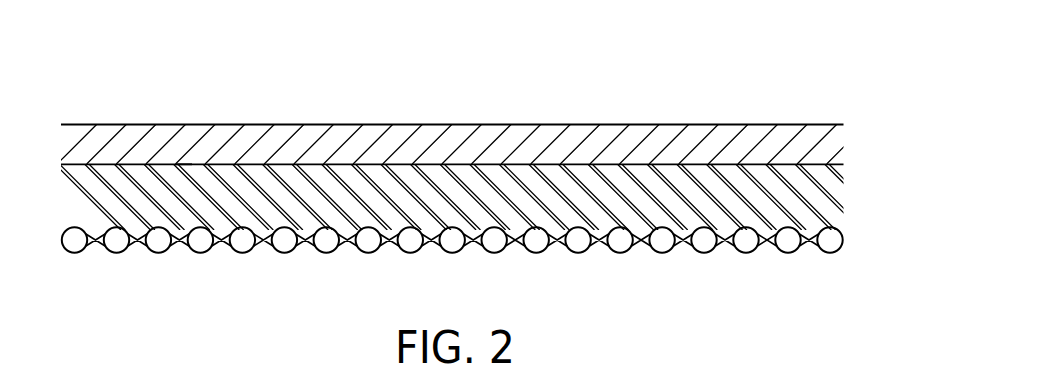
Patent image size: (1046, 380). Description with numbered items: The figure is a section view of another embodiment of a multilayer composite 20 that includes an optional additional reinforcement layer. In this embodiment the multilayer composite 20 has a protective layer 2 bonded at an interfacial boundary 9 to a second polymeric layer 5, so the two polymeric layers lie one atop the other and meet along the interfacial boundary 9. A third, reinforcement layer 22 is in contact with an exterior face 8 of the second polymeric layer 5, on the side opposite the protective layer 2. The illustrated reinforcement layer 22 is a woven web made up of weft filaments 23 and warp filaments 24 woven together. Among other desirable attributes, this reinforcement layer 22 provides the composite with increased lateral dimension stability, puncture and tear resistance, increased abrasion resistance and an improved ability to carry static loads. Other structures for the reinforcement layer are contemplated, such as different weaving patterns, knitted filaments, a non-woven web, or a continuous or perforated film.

The multilayer composite 20 is at (519, 82).
The protective layer 2 is at (105, 143).
The interfacial boundary 9 is at (184, 164).
The second polymeric layer 5 is at (644, 239).
The reinforcement layer 22 is at (327, 253).
The warp filaments 24 is at (578, 242).
The exterior face 8 is at (182, 240).
The weft filaments 23 is at (512, 247).